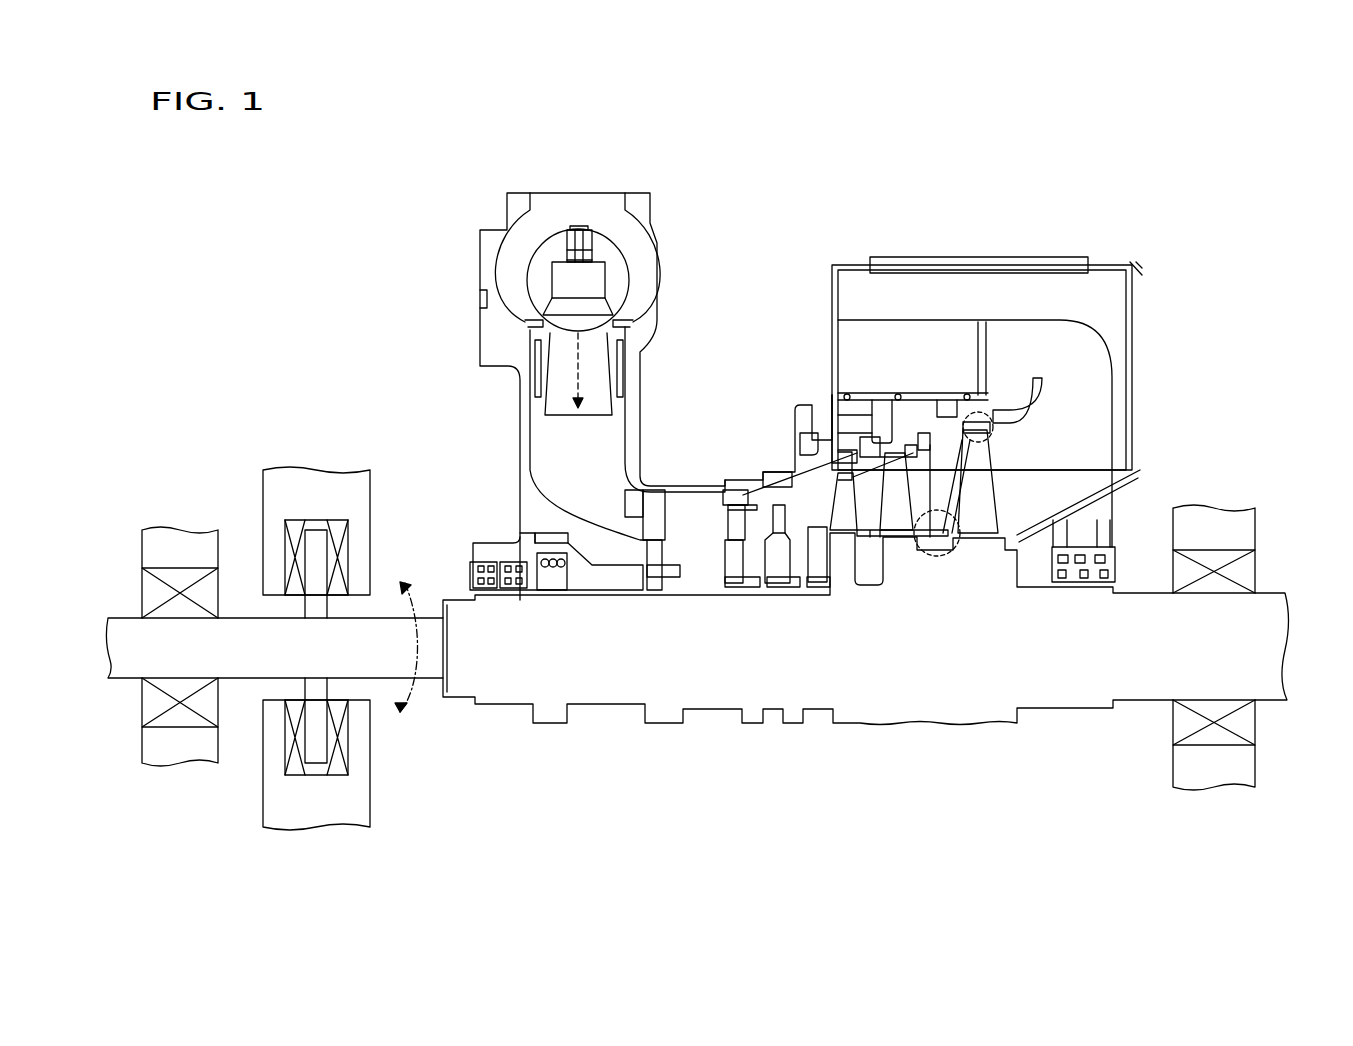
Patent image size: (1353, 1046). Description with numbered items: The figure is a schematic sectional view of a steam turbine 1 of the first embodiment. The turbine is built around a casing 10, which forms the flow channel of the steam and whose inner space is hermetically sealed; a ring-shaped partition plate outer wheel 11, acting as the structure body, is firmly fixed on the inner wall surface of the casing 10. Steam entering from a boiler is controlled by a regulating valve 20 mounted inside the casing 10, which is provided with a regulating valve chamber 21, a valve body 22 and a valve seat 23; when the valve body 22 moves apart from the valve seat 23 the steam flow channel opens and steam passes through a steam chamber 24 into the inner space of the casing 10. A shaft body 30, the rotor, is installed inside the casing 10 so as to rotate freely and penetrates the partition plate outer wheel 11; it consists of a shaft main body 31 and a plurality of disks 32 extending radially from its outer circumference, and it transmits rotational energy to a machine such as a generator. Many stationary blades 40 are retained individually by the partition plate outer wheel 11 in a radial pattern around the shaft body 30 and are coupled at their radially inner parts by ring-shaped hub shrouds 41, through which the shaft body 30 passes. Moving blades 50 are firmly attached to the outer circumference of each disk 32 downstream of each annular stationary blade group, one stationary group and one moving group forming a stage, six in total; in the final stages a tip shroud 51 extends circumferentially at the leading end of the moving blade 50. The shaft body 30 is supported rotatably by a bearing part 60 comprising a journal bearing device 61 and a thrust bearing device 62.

The steam turbine 1 is at (812, 322).
The casing 10 is at (760, 452).
The partition plate outer wheel 11 is at (630, 497).
The regulating valve 20 is at (612, 285).
The regulating valve chamber 21 is at (603, 243).
The valve body 22 is at (600, 318).
The valve seat 23 is at (540, 308).
The steam chamber 24 is at (610, 425).
The shaft body 30 is at (852, 682).
The shaft main body 31 is at (955, 690).
The disk 32 is at (655, 555).
The stationary blade 40 is at (640, 527).
The hub shroud 41 is at (730, 588).
The moving blade 50 is at (660, 528).
The tip shroud 51 is at (963, 432).
The bearing part 60 is at (152, 456).
The journal bearing device 61 is at (148, 600).
The thrust bearing device 62 is at (342, 560).